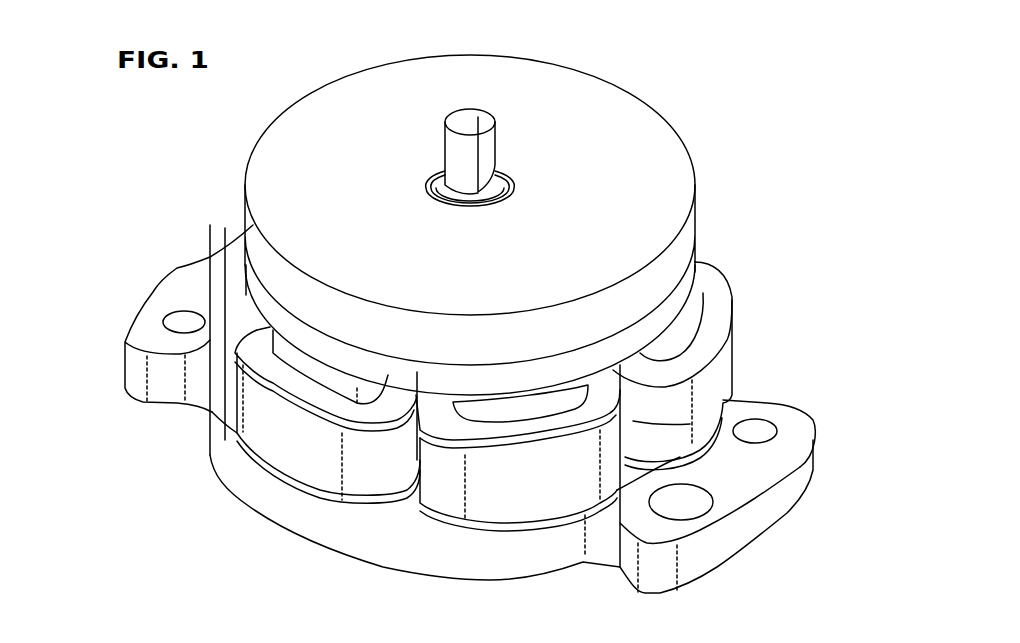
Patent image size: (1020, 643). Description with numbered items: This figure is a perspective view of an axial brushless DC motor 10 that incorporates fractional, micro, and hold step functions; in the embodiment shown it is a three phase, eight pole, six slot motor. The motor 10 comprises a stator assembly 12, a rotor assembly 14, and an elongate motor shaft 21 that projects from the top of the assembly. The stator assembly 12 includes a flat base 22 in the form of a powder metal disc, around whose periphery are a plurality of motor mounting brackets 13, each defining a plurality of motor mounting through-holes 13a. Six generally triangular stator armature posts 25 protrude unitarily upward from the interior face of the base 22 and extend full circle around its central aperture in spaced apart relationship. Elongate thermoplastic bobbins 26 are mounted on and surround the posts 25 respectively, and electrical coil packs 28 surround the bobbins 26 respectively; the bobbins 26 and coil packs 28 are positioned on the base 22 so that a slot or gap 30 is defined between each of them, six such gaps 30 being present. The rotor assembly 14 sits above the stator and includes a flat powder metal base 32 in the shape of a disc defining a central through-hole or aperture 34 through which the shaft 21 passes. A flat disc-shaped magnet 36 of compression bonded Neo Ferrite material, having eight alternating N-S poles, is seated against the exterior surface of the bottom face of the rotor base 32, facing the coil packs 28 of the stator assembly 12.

The axial brushless DC motor 10 is at (702, 100).
The stator assembly 12 is at (208, 467).
The motor mounting bracket 13 is at (173, 285).
The motor mounting through-hole 13a is at (175, 326).
The rotor assembly 14 is at (608, 80).
The motor shaft 21 is at (487, 147).
The base 22 is at (553, 550).
The stator armature post 25 is at (222, 465).
The bobbin 26 is at (202, 258).
The electrical coil pack 28 is at (713, 363).
The slot or gap 30 is at (725, 407).
The rotor base 32 is at (660, 170).
The central through-hole or aperture 34 is at (441, 202).
The magnet 36 is at (662, 305).